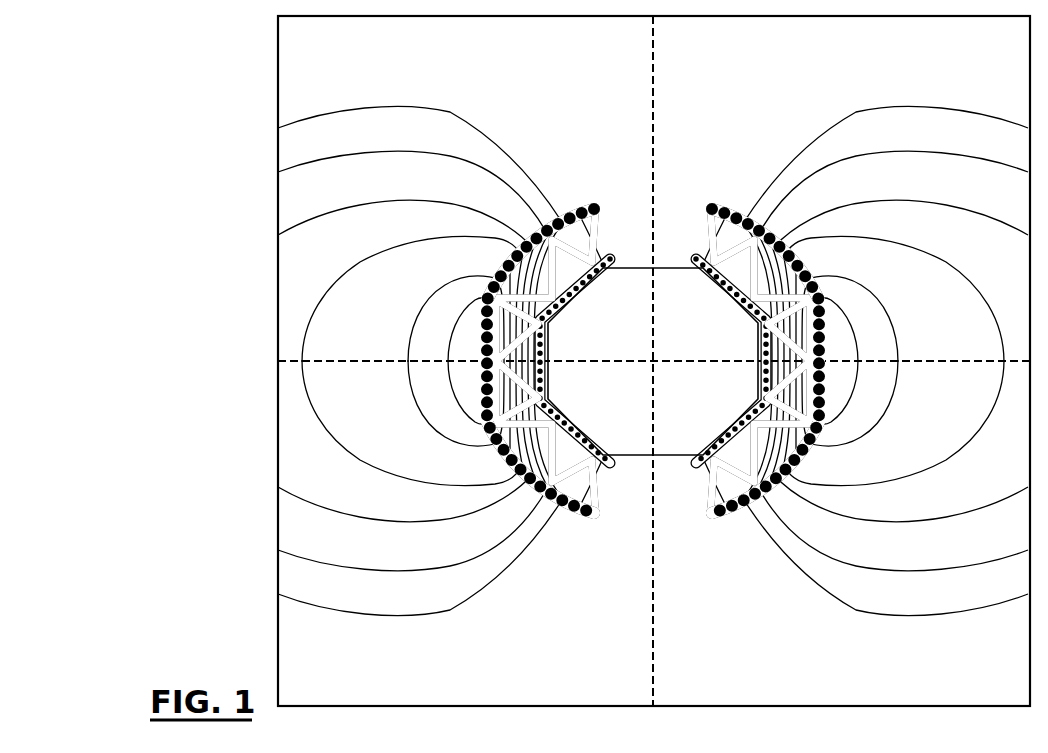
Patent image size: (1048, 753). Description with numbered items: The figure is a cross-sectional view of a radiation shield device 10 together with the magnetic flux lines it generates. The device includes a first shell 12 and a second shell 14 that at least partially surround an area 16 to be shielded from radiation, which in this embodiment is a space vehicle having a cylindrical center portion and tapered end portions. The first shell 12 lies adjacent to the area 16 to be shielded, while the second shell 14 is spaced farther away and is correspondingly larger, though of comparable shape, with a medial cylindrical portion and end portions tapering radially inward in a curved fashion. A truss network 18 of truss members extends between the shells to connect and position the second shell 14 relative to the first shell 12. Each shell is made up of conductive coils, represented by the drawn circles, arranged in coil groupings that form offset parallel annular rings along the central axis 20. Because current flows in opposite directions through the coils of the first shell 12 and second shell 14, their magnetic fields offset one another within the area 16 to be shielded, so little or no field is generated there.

The radiation shield device 10 is at (785, 82).
The first shell 12 is at (653, 350).
The second shell 14 is at (592, 207).
The area to be shielded 16 is at (667, 268).
The truss network 18 is at (705, 492).
The central axis 20 is at (653, 71).